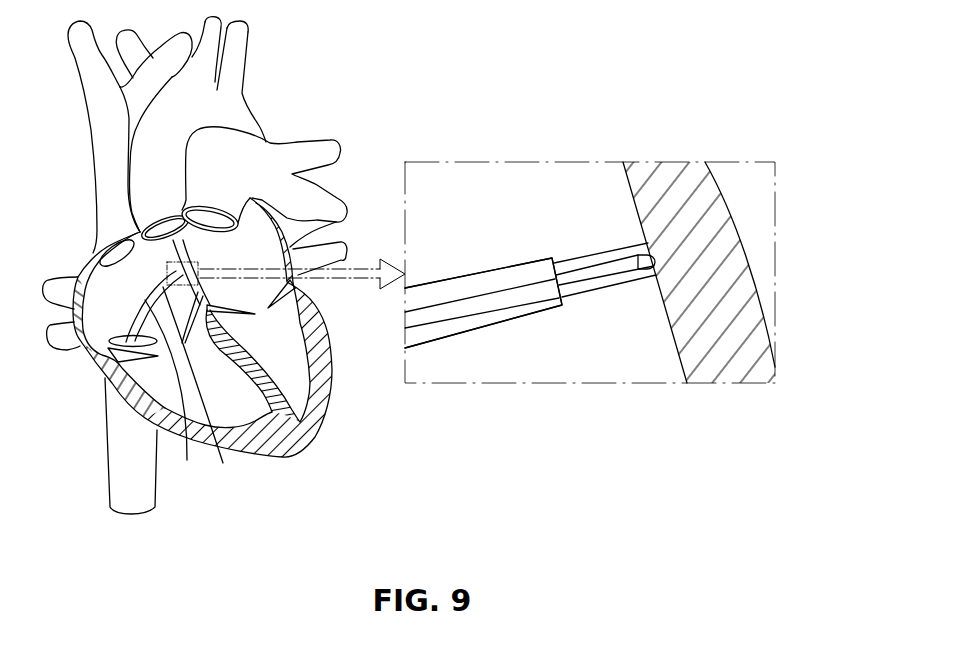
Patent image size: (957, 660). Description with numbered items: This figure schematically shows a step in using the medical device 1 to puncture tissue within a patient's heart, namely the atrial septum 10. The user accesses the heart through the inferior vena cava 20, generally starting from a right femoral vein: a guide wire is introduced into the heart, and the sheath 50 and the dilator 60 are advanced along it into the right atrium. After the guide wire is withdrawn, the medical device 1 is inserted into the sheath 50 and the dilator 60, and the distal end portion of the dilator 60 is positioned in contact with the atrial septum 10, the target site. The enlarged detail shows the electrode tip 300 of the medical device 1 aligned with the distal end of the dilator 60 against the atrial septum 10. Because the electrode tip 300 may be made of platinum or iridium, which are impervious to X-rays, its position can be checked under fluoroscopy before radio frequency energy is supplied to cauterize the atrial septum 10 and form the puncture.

The medical device 1 is at (503, 268).
The atrial septum 10 is at (190, 437).
The inferior vena cava 20 is at (122, 486).
The sheath 50 is at (132, 312).
The dilator 60 is at (166, 268).
The electrode tip 300 is at (657, 243).